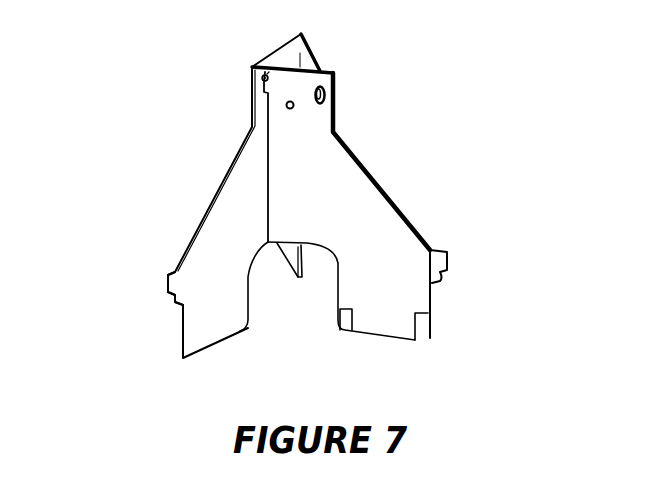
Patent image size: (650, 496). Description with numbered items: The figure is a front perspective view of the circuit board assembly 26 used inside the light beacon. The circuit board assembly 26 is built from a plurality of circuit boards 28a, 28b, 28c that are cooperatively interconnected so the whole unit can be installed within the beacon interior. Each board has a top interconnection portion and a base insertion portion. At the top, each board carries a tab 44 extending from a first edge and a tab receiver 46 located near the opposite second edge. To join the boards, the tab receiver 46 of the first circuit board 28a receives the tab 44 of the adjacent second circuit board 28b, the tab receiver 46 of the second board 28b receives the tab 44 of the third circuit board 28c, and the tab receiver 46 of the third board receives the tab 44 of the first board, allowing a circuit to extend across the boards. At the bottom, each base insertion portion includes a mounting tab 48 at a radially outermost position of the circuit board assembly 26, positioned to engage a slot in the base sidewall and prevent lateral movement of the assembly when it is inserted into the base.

The circuit board assembly 26 is at (112, 345).
The circuit board 28a is at (316, 60).
The circuit board 28b is at (383, 190).
The circuit board 28c is at (213, 220).
The tab 44 is at (261, 79).
The tab receiver 46 is at (328, 92).
The mounting tab 48 is at (447, 250).